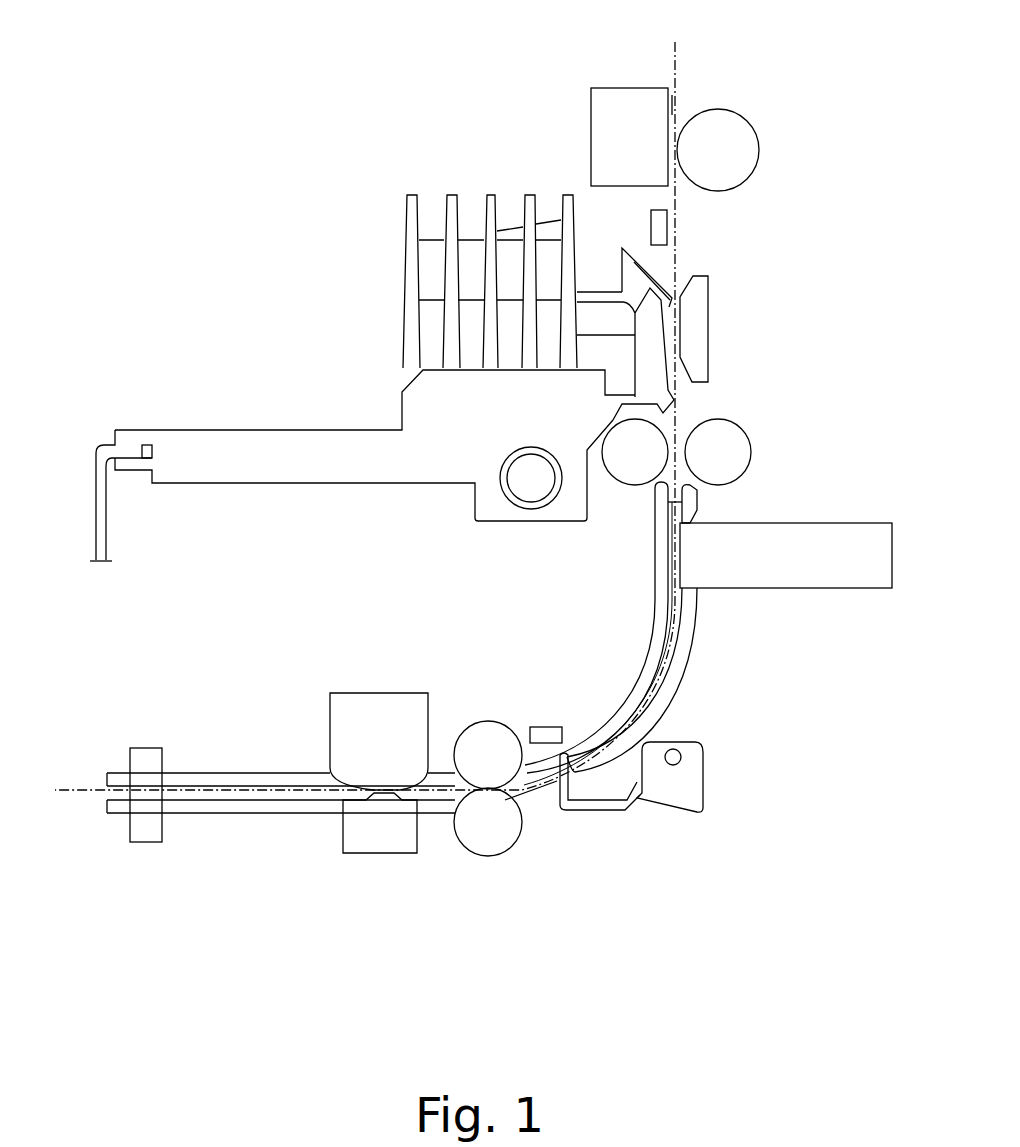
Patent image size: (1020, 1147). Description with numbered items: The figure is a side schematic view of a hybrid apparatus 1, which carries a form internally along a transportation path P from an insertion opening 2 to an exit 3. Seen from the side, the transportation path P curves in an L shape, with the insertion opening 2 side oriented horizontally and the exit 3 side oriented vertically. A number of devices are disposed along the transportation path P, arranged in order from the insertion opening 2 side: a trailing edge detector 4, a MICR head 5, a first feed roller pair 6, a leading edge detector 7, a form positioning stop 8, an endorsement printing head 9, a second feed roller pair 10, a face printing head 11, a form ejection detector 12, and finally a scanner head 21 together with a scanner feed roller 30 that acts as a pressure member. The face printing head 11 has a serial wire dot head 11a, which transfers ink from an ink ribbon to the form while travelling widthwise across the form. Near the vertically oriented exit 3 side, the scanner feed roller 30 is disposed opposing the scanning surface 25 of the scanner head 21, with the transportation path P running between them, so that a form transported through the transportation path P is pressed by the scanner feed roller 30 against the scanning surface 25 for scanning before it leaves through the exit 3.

The hybrid apparatus 1 is at (173, 38).
The insertion opening 2 is at (103, 797).
The exit 3 is at (682, 98).
The trailing edge detector 4 is at (146, 748).
The MICR head 5 is at (383, 693).
The first feed roller pair 6 is at (490, 721).
The leading edge detector 7 is at (546, 726).
The form positioning stop 8 is at (580, 812).
The endorsement printing head 9 is at (778, 523).
The second feed roller pair 10 is at (750, 424).
The face printing head 11 is at (460, 175).
The serial wire dot head 11a is at (632, 258).
The form ejection detector 12 is at (648, 222).
The scanner head 21 is at (617, 88).
The scanning surface 25 is at (673, 106).
The scanner feed roller 30 is at (760, 148).
The transportation path P is at (671, 68).